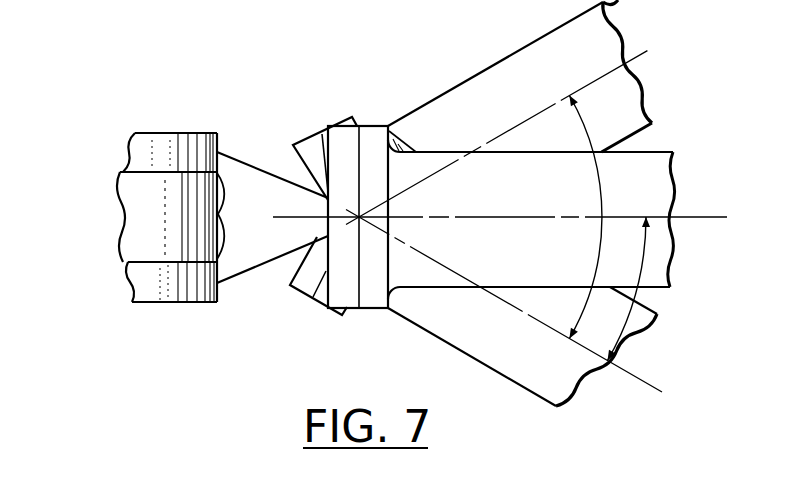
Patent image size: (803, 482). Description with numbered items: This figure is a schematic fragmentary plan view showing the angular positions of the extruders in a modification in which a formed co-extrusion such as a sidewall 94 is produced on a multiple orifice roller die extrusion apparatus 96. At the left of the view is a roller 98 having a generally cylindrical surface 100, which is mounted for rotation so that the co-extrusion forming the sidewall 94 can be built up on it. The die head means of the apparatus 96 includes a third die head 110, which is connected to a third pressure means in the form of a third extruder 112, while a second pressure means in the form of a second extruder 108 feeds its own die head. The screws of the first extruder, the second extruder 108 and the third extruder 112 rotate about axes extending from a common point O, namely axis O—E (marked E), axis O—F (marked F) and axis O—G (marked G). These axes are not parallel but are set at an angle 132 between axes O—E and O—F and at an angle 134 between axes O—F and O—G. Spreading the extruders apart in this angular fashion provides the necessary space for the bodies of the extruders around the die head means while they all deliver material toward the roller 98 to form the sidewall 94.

The sidewall 94 is at (132, 223).
The roller 98 is at (137, 152).
The cylindrical surface 100 is at (152, 142).
The multiple orifice roller die extrusion apparatus 96 is at (381, 89).
The third die head 110 is at (272, 181).
The third extruder 112 is at (658, 243).
The second extruder 108 is at (555, 407).
The angle 132 is at (598, 228).
The angle 134 is at (637, 295).
The axis O— E is at (662, 45).
The axis O— F is at (643, 380).
The axis O— G is at (692, 215).
The point O is at (362, 225).